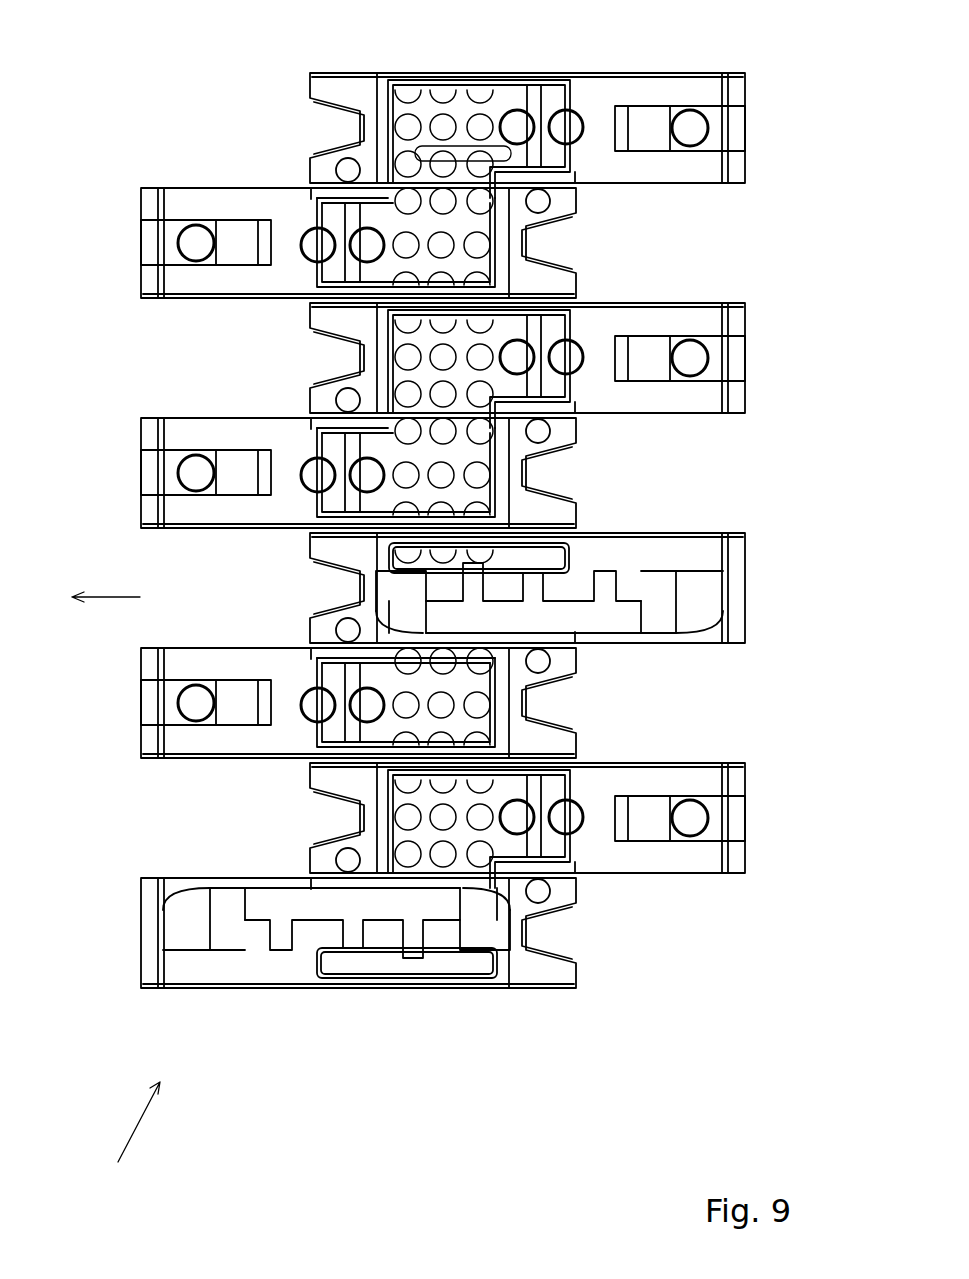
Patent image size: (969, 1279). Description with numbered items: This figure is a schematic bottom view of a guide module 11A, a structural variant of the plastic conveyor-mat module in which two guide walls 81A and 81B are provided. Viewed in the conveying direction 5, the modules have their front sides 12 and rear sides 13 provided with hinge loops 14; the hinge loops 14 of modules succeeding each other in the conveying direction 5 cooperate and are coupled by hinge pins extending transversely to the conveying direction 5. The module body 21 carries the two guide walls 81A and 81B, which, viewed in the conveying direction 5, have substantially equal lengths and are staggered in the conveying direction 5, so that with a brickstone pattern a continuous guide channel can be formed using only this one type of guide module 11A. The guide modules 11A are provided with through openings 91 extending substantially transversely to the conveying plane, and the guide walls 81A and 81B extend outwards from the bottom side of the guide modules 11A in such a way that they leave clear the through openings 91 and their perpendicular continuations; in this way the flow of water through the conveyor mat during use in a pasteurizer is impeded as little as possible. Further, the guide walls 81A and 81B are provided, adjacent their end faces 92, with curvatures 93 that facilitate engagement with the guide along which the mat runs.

The conveying direction 5 is at (106, 584).
The guide module 11A is at (122, 1139).
The front side 12 is at (140, 200).
The rear side 13 is at (748, 93).
The hinge loops 14 is at (700, 318).
The module body 21 is at (442, 413).
The guide wall 81A is at (330, 905).
The guide wall 81B is at (608, 620).
The through openings 91 is at (690, 125).
The end faces 92 is at (395, 598).
The curvatures 93 is at (700, 632).